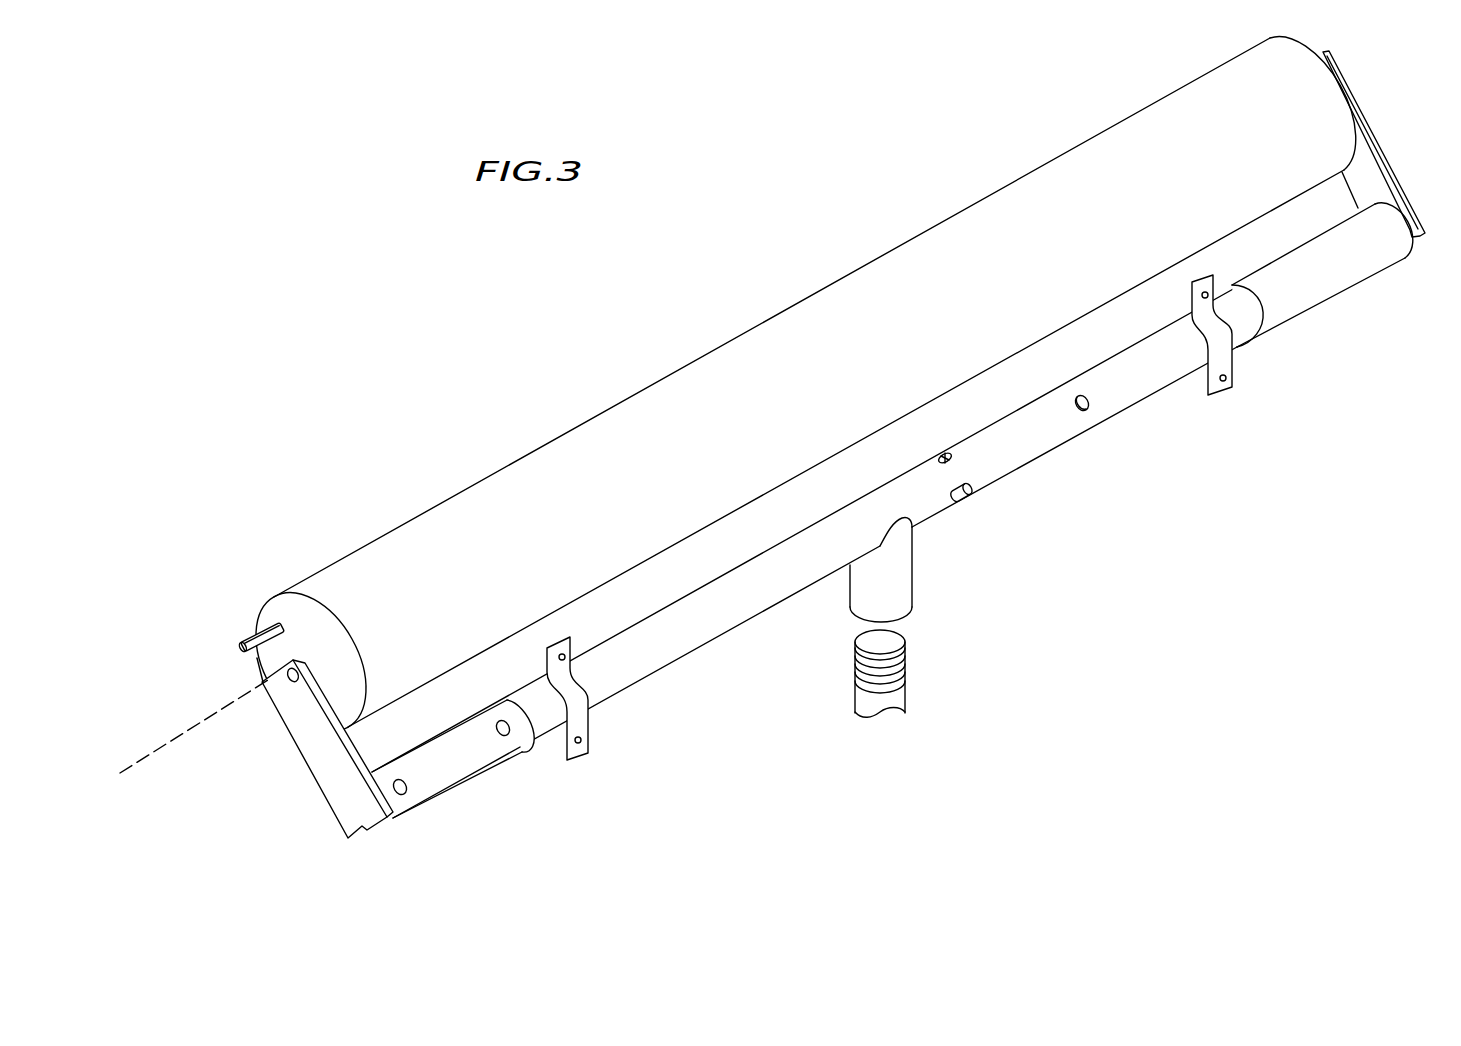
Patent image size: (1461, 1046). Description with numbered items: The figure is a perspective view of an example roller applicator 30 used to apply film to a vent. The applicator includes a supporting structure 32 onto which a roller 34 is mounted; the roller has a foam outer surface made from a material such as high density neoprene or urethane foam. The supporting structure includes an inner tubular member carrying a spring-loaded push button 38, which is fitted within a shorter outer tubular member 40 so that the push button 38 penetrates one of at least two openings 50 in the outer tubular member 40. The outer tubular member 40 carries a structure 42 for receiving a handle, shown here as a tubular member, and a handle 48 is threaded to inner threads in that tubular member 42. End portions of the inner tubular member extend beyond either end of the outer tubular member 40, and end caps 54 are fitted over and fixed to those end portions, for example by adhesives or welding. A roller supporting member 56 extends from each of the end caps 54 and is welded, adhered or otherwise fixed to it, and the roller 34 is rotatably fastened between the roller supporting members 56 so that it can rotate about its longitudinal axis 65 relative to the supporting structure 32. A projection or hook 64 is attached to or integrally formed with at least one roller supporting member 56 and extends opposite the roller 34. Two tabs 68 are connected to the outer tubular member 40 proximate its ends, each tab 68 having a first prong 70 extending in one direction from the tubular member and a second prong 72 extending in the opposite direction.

The roller applicator 30 is at (248, 775).
The supporting structure 32 is at (1190, 395).
The roller 34 is at (348, 566).
The spring-loaded push button 38 is at (973, 495).
The outer tubular member 40 is at (653, 658).
The structure for receiving a handle 42 is at (900, 583).
The handle 48 is at (905, 672).
The openings 50 is at (945, 452).
The end caps 54 is at (453, 775).
The roller supporting member 56 is at (333, 750).
The projection or hook 64 is at (243, 647).
The longitudinal axis 65 is at (208, 720).
The tabs 68 is at (575, 698).
The first prong 70 is at (563, 657).
The second prong 72 is at (580, 742).